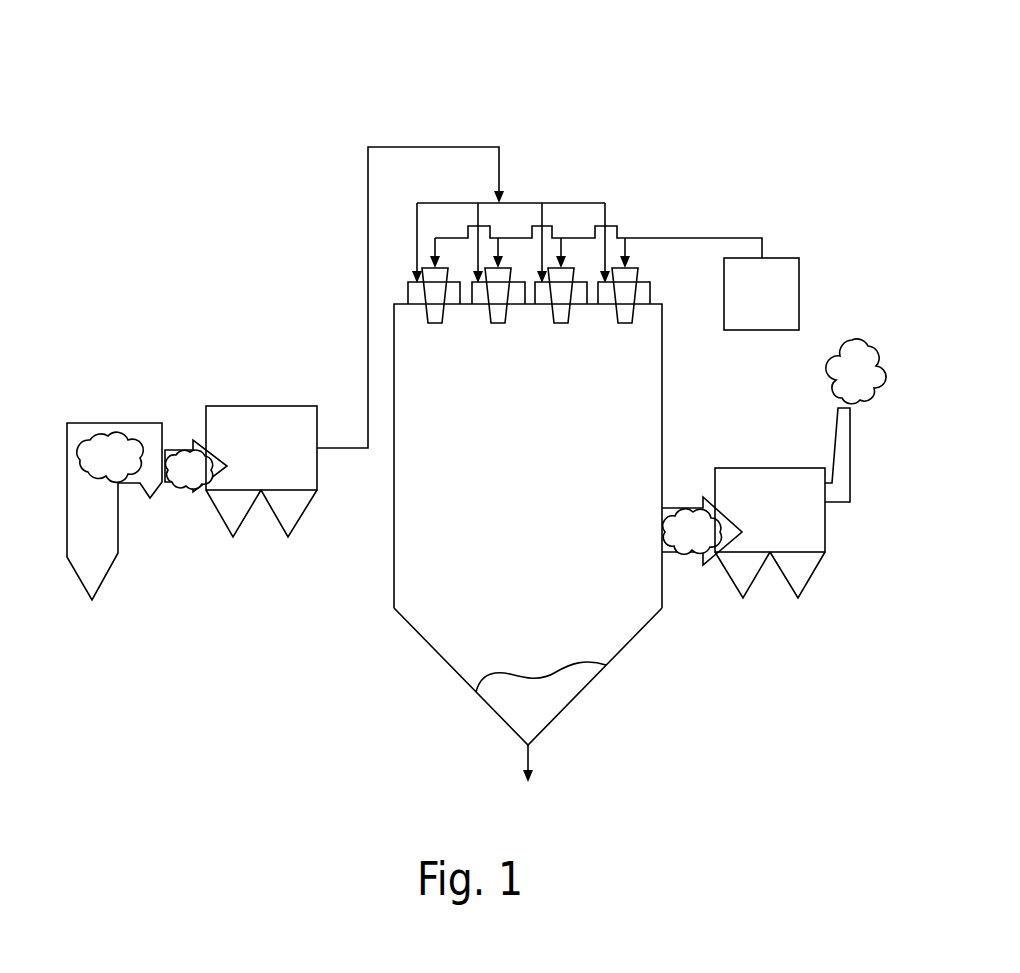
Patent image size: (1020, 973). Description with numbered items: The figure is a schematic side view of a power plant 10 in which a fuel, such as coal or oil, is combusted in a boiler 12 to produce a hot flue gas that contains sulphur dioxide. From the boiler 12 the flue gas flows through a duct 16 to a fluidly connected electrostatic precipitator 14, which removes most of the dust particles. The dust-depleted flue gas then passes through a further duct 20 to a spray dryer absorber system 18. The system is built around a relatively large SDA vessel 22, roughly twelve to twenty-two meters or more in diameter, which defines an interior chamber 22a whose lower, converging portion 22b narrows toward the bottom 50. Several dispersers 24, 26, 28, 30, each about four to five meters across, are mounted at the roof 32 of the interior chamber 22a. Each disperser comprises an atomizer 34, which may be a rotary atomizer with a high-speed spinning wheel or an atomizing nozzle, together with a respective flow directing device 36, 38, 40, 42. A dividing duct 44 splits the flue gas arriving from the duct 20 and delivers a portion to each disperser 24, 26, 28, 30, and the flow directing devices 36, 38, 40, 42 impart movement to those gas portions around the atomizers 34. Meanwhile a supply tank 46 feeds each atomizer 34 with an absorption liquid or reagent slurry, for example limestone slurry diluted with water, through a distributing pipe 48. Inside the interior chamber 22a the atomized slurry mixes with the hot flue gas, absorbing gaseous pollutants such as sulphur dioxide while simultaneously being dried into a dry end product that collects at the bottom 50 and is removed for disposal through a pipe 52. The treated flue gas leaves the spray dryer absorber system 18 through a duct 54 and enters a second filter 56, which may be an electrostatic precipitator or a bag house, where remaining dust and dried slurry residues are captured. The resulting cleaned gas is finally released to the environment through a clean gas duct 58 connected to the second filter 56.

The power plant 10 is at (216, 90).
The boiler 12 is at (113, 423).
The electrostatic precipitator 14 is at (260, 406).
The duct 16 is at (168, 450).
The spray dryer absorber system 18 is at (467, 557).
The duct 20 is at (368, 170).
The SDA vessel 22 is at (467, 524).
The interior chamber 22a is at (394, 450).
The lower hopper portion 22b is at (394, 540).
The disperser 24 is at (438, 352).
The disperser 26 is at (502, 352).
The disperser 28 is at (565, 352).
The disperser 30 is at (626, 352).
The roof 32 is at (408, 307).
The atomizer 34 is at (440, 345).
The flow directing device 36 is at (420, 323).
The flow directing device 38 is at (484, 323).
The flow directing device 40 is at (548, 323).
The flow directing device 42 is at (611, 323).
The dividing duct 44 is at (573, 202).
The supply source or tank 46 is at (778, 258).
The distributing pipe 48 is at (697, 238).
The bottom 50 is at (588, 680).
The pipe 52 is at (512, 763).
The duct 54 is at (678, 508).
The second filter 56 is at (757, 468).
The clean gas duct 58 is at (837, 503).